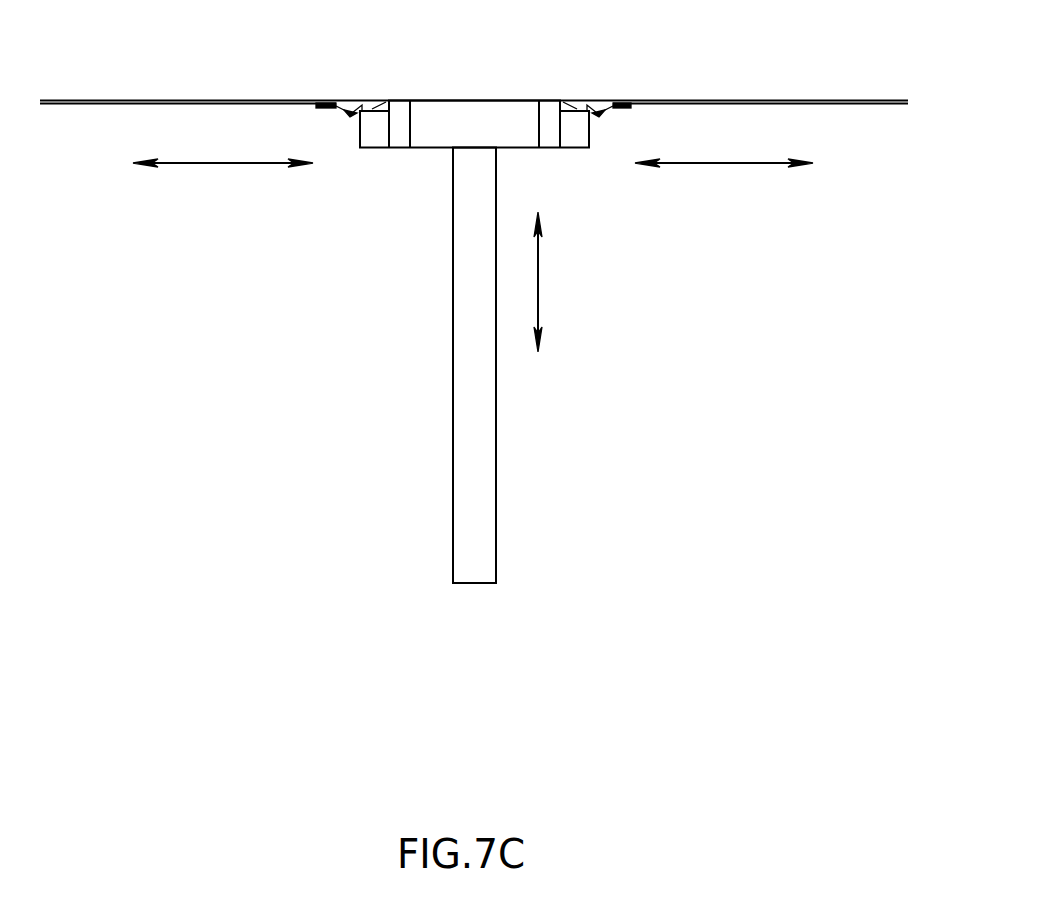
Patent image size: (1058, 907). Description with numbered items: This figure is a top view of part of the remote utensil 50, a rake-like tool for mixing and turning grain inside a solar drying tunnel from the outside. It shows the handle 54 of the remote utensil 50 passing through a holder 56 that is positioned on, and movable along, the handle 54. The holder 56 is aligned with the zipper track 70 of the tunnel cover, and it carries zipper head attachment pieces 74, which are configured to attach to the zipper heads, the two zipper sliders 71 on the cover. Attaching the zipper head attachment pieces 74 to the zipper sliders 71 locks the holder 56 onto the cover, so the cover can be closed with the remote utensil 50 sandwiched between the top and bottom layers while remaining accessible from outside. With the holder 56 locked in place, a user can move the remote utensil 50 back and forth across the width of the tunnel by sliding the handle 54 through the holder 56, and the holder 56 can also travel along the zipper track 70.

The remote utensil 50 is at (473, 304).
The handle 54 is at (496, 425).
The holder 56 is at (404, 172).
The zipper track 70 is at (160, 100).
The zipper sliders 71 is at (327, 102).
The zipper head attachment pieces 74 is at (371, 111).